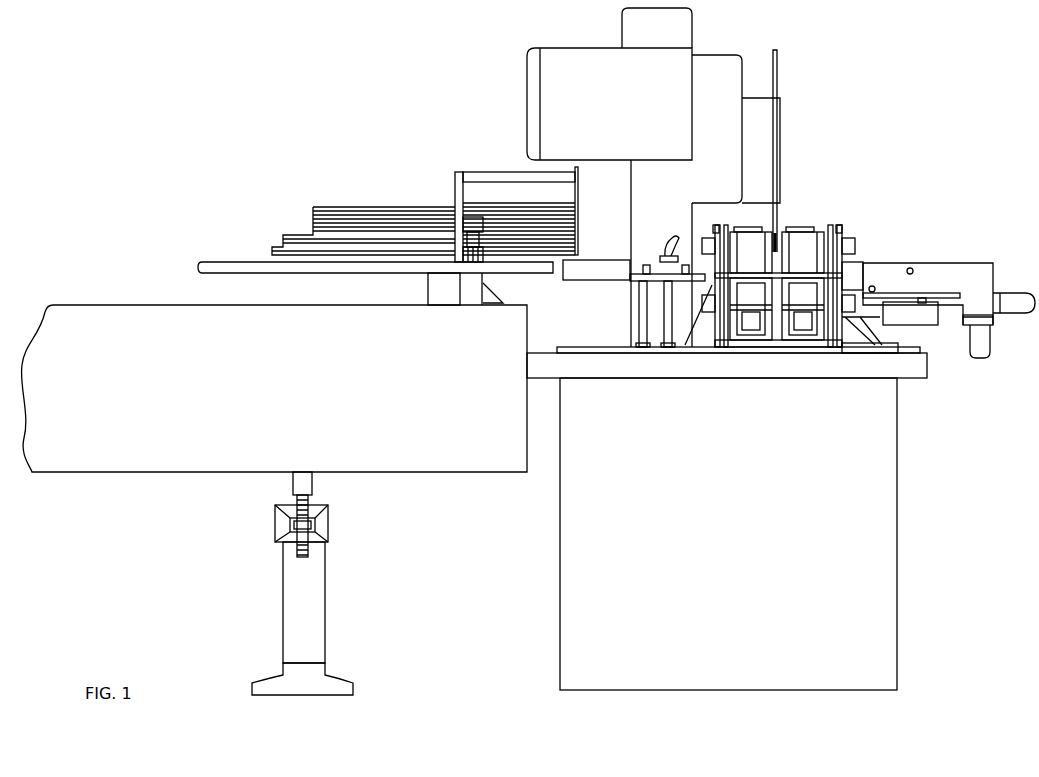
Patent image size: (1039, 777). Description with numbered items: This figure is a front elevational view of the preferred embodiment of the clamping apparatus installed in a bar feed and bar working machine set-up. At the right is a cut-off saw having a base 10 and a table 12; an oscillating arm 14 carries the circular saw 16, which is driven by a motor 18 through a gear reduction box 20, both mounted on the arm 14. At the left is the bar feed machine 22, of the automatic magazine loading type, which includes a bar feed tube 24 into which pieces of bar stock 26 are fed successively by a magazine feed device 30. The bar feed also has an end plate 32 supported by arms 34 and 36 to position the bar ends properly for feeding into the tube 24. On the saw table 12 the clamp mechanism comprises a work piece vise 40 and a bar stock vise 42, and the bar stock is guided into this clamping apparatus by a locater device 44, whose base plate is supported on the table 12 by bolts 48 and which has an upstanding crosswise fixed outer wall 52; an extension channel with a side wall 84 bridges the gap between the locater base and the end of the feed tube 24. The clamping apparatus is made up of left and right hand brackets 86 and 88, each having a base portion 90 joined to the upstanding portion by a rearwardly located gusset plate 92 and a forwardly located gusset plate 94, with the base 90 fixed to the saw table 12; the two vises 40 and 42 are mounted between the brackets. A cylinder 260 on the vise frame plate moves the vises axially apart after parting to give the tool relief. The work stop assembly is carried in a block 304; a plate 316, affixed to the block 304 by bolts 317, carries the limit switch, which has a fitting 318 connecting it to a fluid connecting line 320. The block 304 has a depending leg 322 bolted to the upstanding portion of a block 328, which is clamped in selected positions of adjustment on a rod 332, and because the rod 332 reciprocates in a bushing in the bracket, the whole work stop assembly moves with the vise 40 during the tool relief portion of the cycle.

The base 10 is at (714, 483).
The table 12 is at (761, 372).
The oscillating arm 14 is at (649, 40).
The circular saw 16 is at (778, 62).
The motor 18 is at (622, 130).
The gear reduction box 20 is at (704, 158).
The bar feed machine 22 is at (303, 392).
The bar feed tube 24 is at (316, 267).
The bar stock 26 is at (352, 207).
The magazine feed device 30 is at (476, 225).
The end plate 32 is at (579, 193).
The arm 34 is at (483, 172).
The arm 36 is at (456, 188).
The work piece vise 40 is at (826, 214).
The bar stock vise 42 is at (728, 218).
The locater device 44 is at (647, 250).
The bolts 48 is at (668, 312).
The fixed outer wall 52 is at (645, 268).
The side wall 84 is at (586, 278).
The left hand bracket 86 is at (716, 232).
The right hand bracket 88 is at (838, 236).
The base portion 90 is at (684, 346).
The rearwardly located gusset plate 92 is at (869, 322).
The forwardly located gusset plate 94 is at (708, 346).
The cylinder 260 is at (850, 272).
The block 304 is at (921, 300).
The plate 316 is at (992, 318).
The bolts 317 is at (910, 268).
The fitting 318 is at (965, 323).
The fluid connecting line 320 is at (975, 354).
The depending leg 322 is at (880, 300).
The block 328 is at (891, 322).
The rod 332 is at (1000, 314).